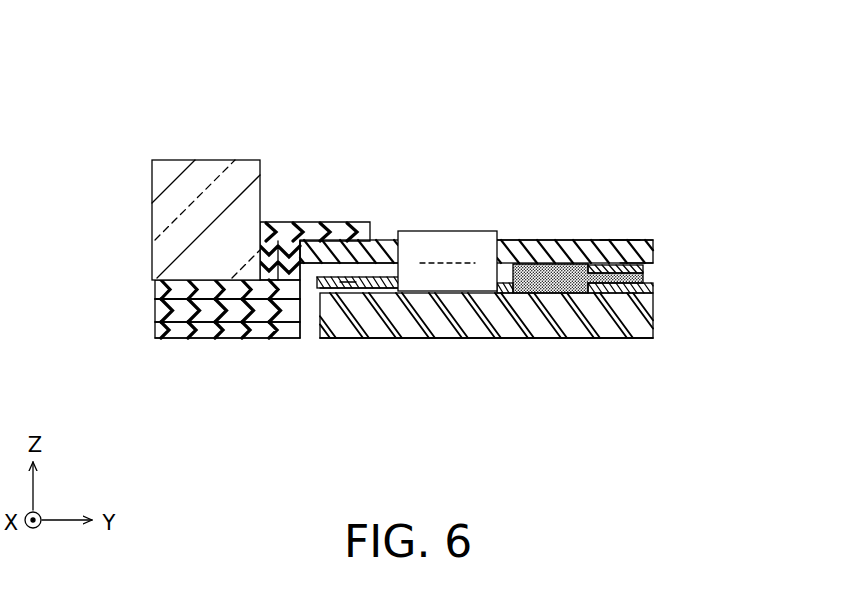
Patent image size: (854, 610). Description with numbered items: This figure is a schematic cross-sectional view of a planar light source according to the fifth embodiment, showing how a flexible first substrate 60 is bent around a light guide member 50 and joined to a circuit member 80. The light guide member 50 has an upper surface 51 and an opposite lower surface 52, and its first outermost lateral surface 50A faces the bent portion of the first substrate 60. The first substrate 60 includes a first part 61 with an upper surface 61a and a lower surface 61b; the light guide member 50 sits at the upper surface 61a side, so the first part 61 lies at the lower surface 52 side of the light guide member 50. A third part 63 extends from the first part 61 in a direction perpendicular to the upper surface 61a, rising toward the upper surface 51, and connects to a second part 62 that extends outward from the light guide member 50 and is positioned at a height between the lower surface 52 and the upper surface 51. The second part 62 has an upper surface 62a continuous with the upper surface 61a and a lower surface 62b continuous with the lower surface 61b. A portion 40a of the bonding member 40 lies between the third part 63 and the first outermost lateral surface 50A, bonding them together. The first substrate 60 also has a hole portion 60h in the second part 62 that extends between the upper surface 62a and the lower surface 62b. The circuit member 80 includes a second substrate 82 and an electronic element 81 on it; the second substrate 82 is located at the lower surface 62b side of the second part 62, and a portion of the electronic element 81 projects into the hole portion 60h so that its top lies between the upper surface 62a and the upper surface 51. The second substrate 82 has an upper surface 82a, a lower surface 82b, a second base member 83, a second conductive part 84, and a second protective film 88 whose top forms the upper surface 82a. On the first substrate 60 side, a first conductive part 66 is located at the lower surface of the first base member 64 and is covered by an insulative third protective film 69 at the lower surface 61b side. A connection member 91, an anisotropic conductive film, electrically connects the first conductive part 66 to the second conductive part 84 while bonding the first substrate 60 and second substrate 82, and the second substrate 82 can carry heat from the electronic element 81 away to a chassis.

The bonding member 40 is at (166, 291).
The portion of the bonding member 40a is at (256, 287).
The light guide member 50 is at (197, 174).
The first outermost lateral surface 50A is at (266, 195).
The upper surface of the light guide member 51 is at (214, 160).
The lower surface of the light guide member 52 is at (207, 282).
The first substrate 60 is at (658, 252).
The hole portion 60h is at (472, 268).
The first part 61 is at (168, 310).
The upper surface of the first part 61a is at (232, 298).
The lower surface of the first part 61b is at (160, 333).
The second part 62 is at (524, 247).
The upper surface of the second part 62a is at (566, 243).
The lower surface of the second part 62b is at (378, 265).
The third part 63 is at (293, 300).
The first base member 64 is at (643, 255).
The first conductive part 66 is at (621, 252).
The third protective film 69 is at (194, 300).
The circuit member 80 is at (457, 343).
The electronic element 81 is at (426, 258).
The second substrate 82 is at (658, 320).
The upper surface of the second substrate 82a is at (342, 282).
The lower surface of the second substrate 82b is at (418, 340).
The second base member 83 is at (612, 290).
The second conductive part 84 is at (604, 272).
The second protective film 88 is at (350, 282).
The connection member 91 is at (541, 293).